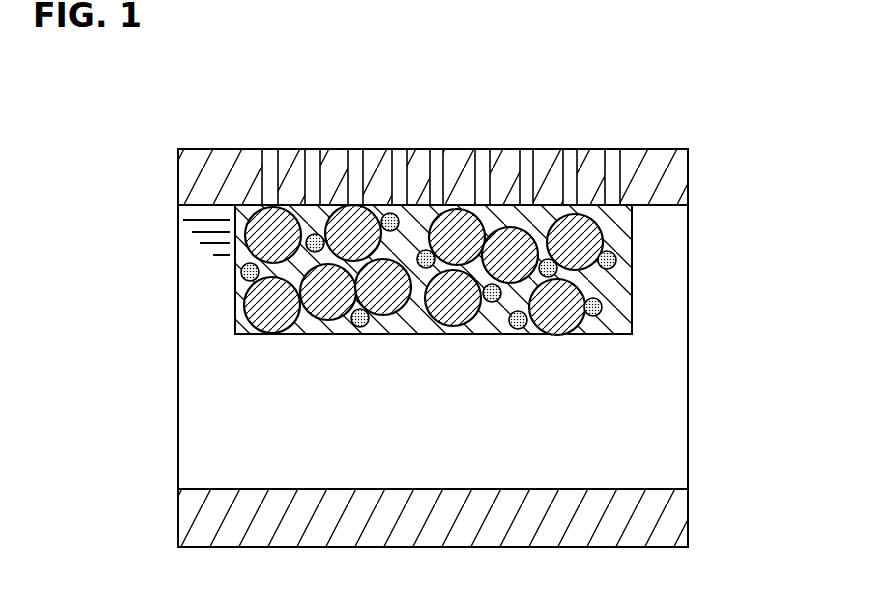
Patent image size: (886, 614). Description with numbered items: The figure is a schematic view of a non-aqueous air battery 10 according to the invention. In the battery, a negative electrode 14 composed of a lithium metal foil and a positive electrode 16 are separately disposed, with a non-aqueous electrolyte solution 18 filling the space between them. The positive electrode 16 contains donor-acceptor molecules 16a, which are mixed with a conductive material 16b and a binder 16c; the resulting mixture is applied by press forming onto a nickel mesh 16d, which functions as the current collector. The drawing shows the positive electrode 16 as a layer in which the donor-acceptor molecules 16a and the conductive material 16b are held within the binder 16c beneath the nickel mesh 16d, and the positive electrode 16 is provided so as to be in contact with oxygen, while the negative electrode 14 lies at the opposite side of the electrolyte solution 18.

The non-aqueous air battery 10 is at (659, 128).
The negative electrode 14 is at (643, 525).
The positive electrode 16 is at (512, 243).
The donor-acceptor molecules 16a is at (503, 271).
The conductive material 16b is at (573, 241).
The binder 16c is at (633, 252).
The nickel mesh 16d is at (643, 185).
The non-aqueous electrolyte solution 18 is at (643, 405).